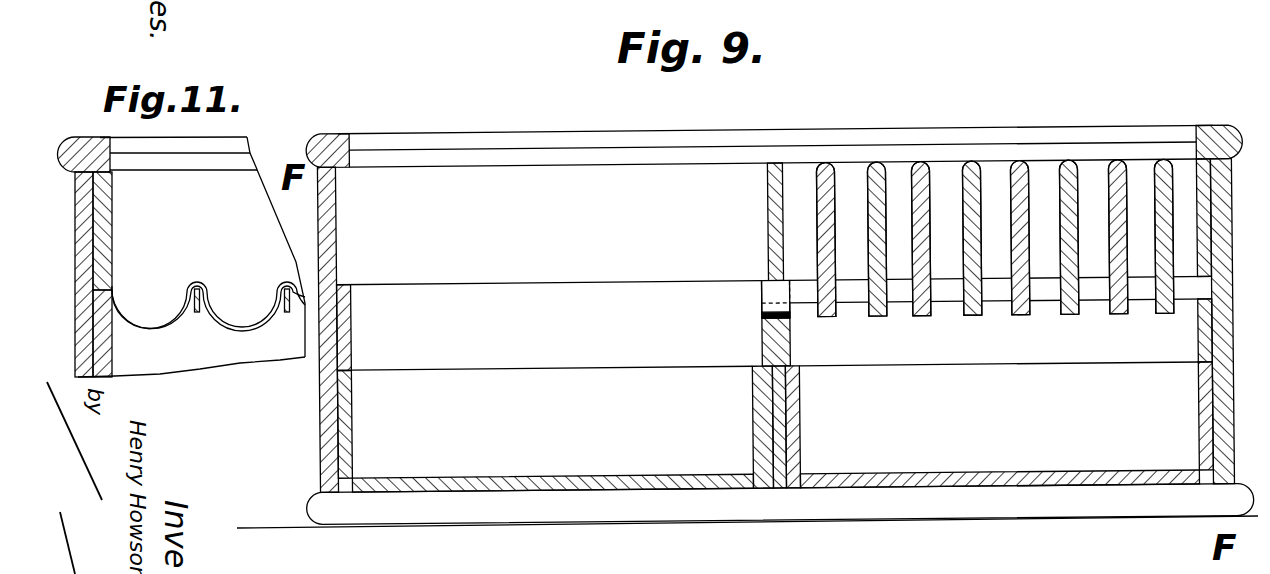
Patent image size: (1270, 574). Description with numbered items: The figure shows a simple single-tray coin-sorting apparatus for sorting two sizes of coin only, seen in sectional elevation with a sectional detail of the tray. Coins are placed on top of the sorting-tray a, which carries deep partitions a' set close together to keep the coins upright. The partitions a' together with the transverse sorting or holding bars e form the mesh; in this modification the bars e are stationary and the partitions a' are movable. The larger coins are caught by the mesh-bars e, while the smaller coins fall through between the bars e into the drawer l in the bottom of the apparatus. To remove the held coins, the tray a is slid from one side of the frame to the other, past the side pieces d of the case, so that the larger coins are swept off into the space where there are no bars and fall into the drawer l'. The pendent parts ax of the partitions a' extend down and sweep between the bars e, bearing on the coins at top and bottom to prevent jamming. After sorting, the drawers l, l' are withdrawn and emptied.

In FIG. 11, the sorting-tray a is at (77, 274).
In FIG. 9, the sorting-tray a is at (792, 325).
In FIG. 11, the partitions a' is at (190, 216).
In FIG. 9, the partitions a' is at (994, 237).
In FIG. 11, the pendent parts ax is at (165, 307).
In FIG. 11, the transverse sorting or holding bars e is at (197, 312).
In FIG. 9, the transverse sorting or holding bars e is at (848, 304).
In FIG. 9, the side pieces d is at (1226, 412).
In FIG. 9, the drawer l is at (999, 425).
In FIG. 9, the drawer l' is at (550, 387).